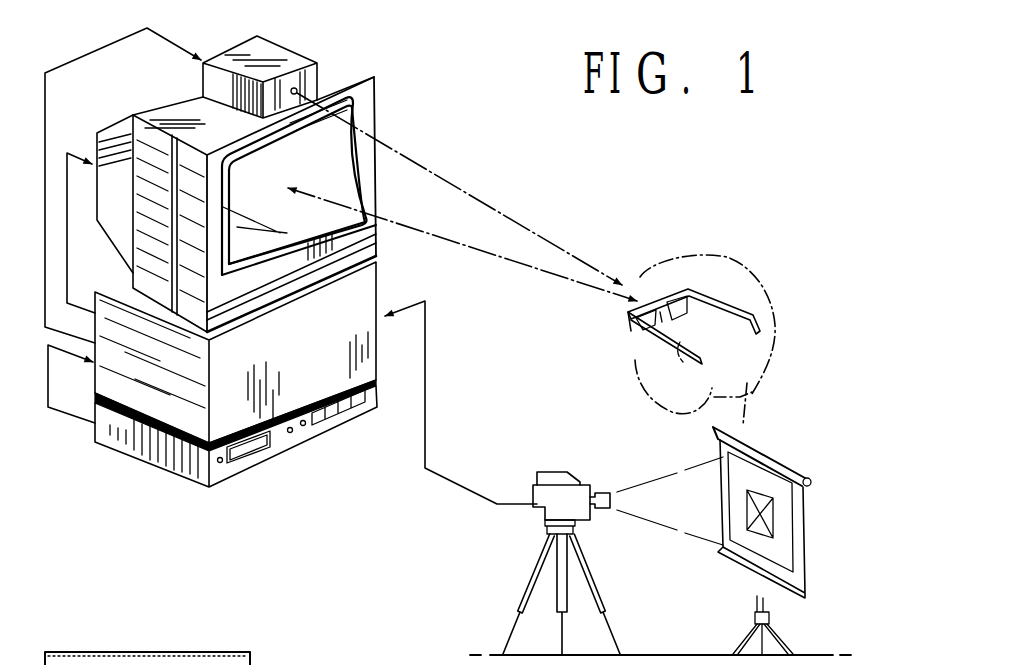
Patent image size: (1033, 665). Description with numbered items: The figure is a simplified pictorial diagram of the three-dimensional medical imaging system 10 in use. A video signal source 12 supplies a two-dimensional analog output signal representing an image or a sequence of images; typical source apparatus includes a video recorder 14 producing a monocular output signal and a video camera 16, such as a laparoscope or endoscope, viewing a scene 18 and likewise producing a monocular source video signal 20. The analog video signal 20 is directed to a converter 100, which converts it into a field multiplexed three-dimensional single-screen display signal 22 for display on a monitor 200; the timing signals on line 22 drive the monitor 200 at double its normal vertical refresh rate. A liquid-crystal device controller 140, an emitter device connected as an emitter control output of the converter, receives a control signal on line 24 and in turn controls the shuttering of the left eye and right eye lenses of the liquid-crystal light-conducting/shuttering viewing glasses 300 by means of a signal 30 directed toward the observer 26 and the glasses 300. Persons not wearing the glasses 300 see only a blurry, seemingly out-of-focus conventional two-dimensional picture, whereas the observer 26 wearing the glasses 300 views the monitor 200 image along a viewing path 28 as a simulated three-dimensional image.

The three-dimensional medical imaging system 10 is at (398, 664).
The video signal source 12 is at (263, 664).
The video recorder 14 is at (148, 440).
The video camera 16 is at (577, 502).
The scene 18 is at (777, 447).
The monocular source video signal 20 is at (65, 417).
The field multiplexed three-dimensional single-screen display signal 22 is at (67, 235).
The line 24 is at (78, 57).
The observer 26 is at (742, 374).
The viewing path 28 is at (488, 252).
The signal 30 is at (503, 214).
The converter 100 is at (292, 377).
The liquid-crystal device controller 140 is at (238, 57).
The monitor 200 is at (377, 103).
The liquid-crystal viewing glasses 300 is at (632, 333).